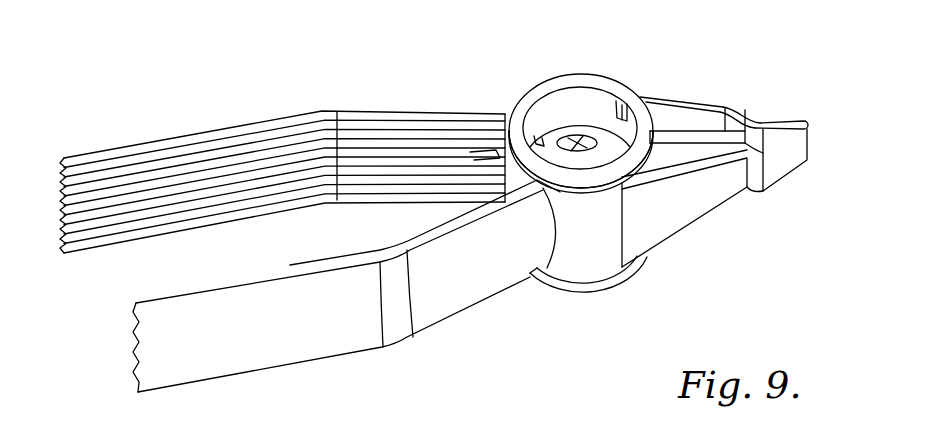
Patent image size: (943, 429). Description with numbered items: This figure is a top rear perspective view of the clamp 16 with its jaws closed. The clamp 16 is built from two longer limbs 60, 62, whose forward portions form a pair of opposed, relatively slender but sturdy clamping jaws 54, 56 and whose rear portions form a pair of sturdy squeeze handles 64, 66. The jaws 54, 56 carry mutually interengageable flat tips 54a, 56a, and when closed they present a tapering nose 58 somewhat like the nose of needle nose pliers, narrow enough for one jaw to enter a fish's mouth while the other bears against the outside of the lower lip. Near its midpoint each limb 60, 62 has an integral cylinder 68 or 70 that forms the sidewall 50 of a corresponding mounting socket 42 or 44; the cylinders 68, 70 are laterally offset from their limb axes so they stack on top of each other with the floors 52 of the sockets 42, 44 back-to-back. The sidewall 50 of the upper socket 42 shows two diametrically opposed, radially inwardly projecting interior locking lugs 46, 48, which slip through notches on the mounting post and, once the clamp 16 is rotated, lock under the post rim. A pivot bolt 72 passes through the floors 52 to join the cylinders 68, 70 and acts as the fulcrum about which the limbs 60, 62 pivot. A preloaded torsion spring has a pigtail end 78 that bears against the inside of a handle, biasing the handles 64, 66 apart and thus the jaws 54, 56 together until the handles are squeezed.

The clamp 16 is at (310, 105).
The socket 42 is at (598, 70).
The socket 44 is at (638, 284).
The locking lug 46 is at (619, 104).
The locking lug 48 is at (537, 137).
The sidewall 50 is at (552, 87).
The floor 52 is at (608, 140).
The clamping jaw 54 is at (725, 107).
The tip 54a is at (794, 118).
The clamping jaw 56 is at (744, 190).
The tip 56a is at (797, 153).
The tapering nose 58 is at (778, 110).
The limb 60 is at (430, 112).
The limb 62 is at (520, 290).
The squeeze handle 64 is at (164, 148).
The squeeze handle 66 is at (283, 352).
The cylinder 68 is at (517, 172).
The cylinder 70 is at (594, 284).
The pivot bolt 72 is at (577, 141).
The pigtail end 78 is at (437, 148).